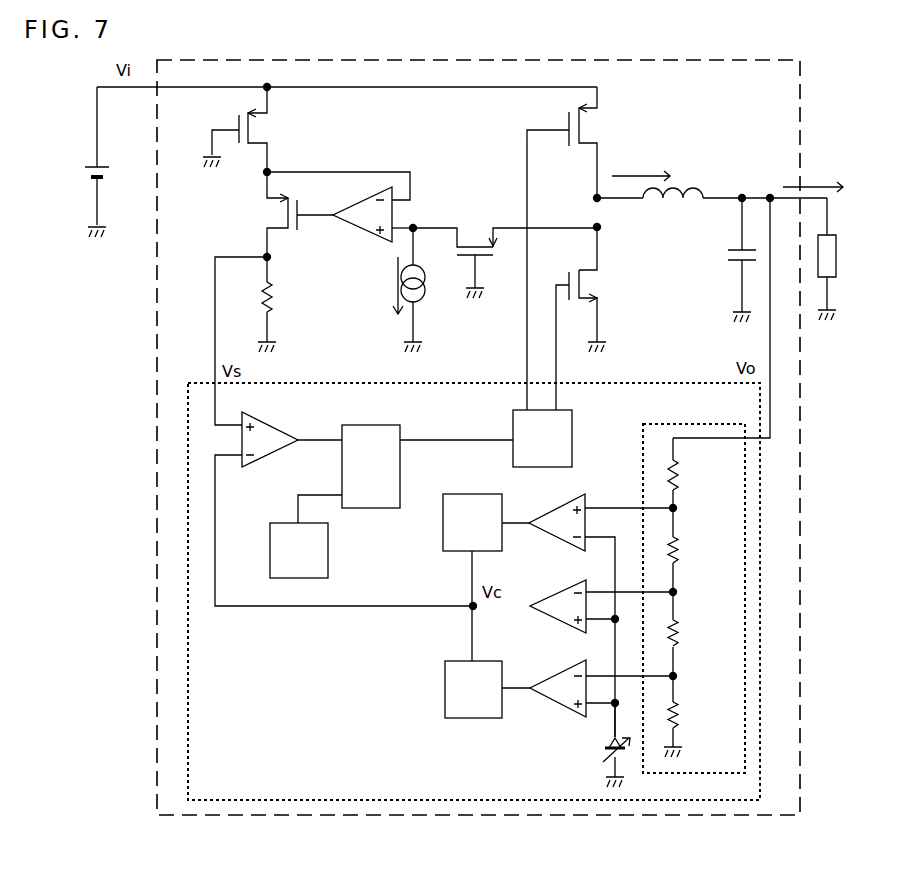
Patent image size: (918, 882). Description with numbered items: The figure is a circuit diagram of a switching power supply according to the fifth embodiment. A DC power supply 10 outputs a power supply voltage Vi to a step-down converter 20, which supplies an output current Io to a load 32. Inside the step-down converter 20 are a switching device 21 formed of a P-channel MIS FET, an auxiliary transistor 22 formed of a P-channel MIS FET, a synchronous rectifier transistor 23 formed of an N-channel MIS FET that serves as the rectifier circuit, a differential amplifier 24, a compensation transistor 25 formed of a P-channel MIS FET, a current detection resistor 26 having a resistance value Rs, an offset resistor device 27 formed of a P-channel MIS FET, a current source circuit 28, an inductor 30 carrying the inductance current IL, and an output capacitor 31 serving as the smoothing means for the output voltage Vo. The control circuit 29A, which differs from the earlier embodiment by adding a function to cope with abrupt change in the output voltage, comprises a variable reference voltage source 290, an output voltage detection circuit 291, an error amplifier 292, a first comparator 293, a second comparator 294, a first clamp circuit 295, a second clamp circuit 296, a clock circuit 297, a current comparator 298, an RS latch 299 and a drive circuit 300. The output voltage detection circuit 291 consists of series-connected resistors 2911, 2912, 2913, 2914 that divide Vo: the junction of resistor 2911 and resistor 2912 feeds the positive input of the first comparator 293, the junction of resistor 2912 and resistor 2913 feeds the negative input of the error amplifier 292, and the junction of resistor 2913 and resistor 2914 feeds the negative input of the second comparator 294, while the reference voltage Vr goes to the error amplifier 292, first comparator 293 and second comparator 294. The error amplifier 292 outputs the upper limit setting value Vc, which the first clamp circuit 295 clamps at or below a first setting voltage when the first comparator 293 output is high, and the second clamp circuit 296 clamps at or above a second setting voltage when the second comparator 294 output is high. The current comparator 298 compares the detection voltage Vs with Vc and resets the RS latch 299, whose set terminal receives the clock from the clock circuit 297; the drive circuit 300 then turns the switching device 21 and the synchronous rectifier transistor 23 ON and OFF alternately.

The DC power supply 10 is at (107, 162).
The step-down converter 20 is at (156, 259).
The switching device 21 is at (606, 128).
The auxiliary transistor 22 is at (266, 125).
The synchronous rectifier transistor 23 is at (605, 284).
The differential amplifier 24 is at (375, 239).
The compensation transistor 25 is at (280, 212).
The current detection resistor 26 is at (272, 303).
The offset resistor device 27 is at (468, 225).
The current source circuit 28 is at (425, 293).
The control circuit 29A is at (697, 383).
The inductor 30 is at (697, 188).
The output capacitor 31 is at (728, 256).
The load 32 is at (835, 235).
The reference voltage source 290 is at (606, 745).
The output voltage detection circuit 291 is at (643, 466).
The error amplifier 292 is at (558, 612).
The first comparator 293 is at (558, 540).
The second comparator 294 is at (558, 712).
The first clamp circuit 295 is at (443, 516).
The second clamp circuit 296 is at (445, 692).
The clock circuit 297 is at (328, 553).
The current comparator 298 is at (275, 429).
The RS latch 299 is at (400, 427).
The drive circuit 300 is at (513, 455).
The resistor 2911 is at (680, 475).
The resistor 2912 is at (680, 552).
The resistor 2913 is at (680, 633).
The resistor 2914 is at (680, 713).